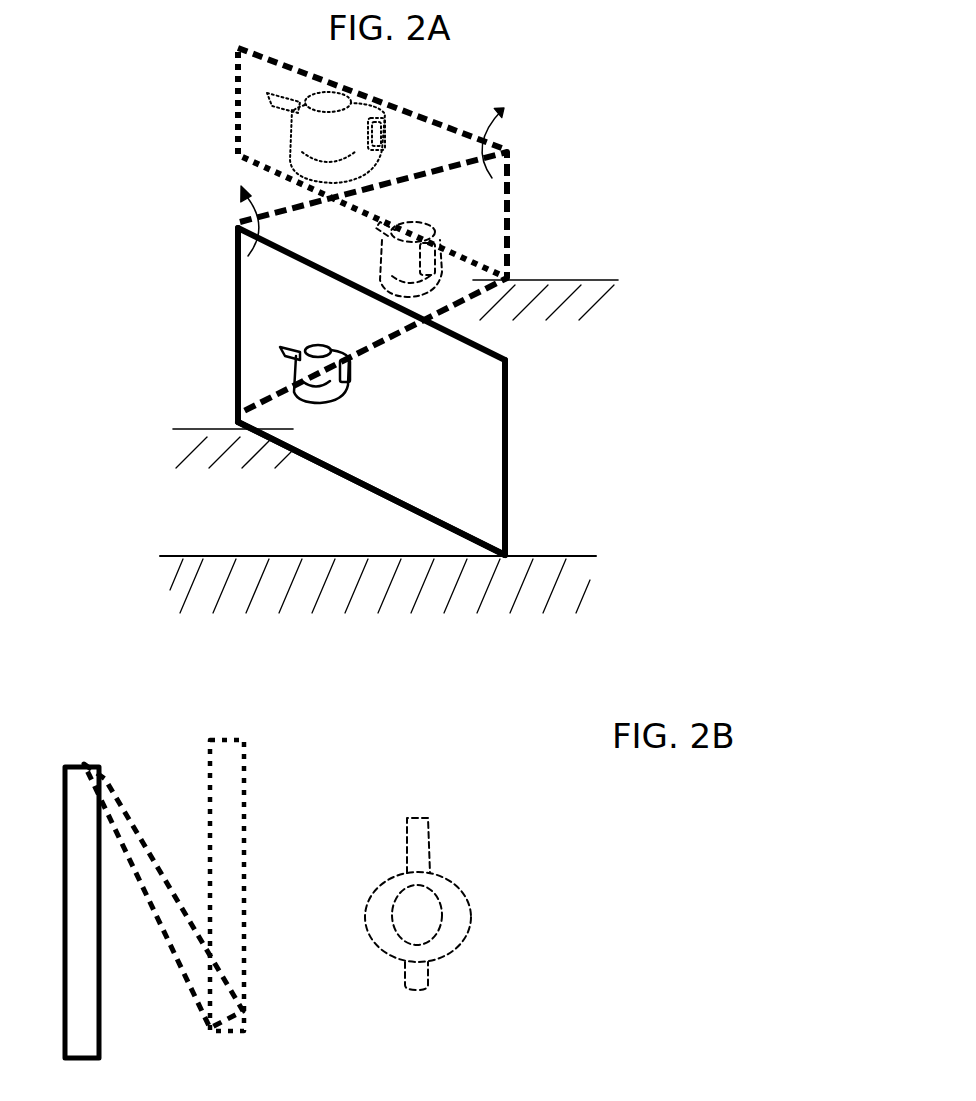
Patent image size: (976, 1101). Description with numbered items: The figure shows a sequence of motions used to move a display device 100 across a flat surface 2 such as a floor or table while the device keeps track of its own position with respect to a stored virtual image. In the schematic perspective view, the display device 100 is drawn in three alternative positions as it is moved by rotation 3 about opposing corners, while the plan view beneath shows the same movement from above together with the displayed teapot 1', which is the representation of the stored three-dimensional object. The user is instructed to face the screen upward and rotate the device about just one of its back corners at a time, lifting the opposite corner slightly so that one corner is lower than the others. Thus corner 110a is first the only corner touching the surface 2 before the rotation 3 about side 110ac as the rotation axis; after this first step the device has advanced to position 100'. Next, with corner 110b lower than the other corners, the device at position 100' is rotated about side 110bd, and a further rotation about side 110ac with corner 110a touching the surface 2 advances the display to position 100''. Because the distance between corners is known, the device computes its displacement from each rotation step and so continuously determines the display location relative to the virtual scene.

In FIG. 2A, the flat surface 2 is at (588, 280).
In FIG. 2A, the rotation 3 is at (364, 182).
In FIG. 2B, the display device 100 is at (72, 849).
In FIG. 2A, the display device in advanced position 100' is at (438, 278).
In FIG. 2B, the display device in advanced position 100' is at (163, 896).
In FIG. 2A, the display device in further advanced position 100'' is at (284, 163).
In FIG. 2B, the display device in further advanced position 100'' is at (282, 885).
In FIG. 2A, the corner 110a is at (490, 535).
In FIG. 2A, the corner 110b is at (240, 410).
In FIG. 2A, the side 110ac is at (522, 447).
In FIG. 2A, the side 110bd is at (238, 307).
In FIG. 2B, the teapot 1' is at (459, 867).